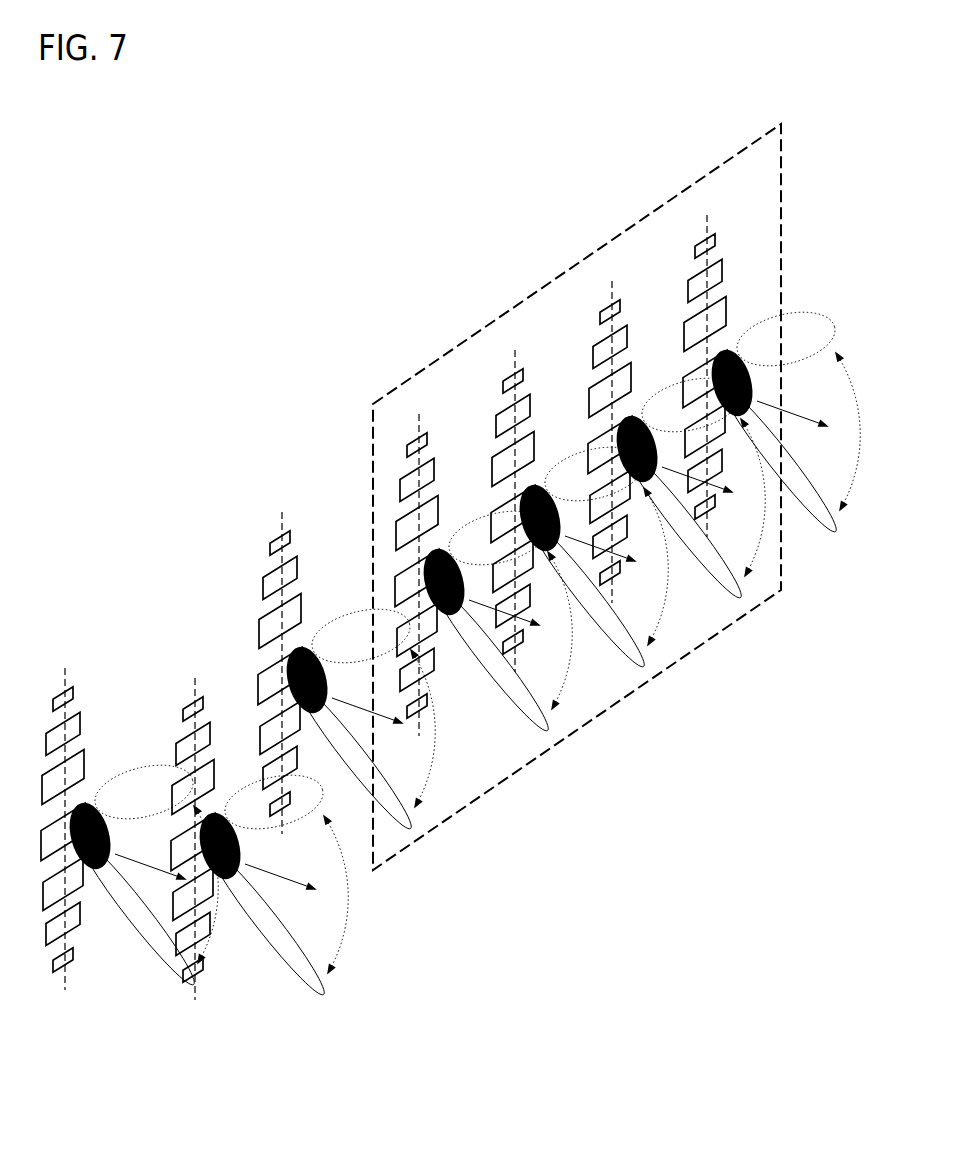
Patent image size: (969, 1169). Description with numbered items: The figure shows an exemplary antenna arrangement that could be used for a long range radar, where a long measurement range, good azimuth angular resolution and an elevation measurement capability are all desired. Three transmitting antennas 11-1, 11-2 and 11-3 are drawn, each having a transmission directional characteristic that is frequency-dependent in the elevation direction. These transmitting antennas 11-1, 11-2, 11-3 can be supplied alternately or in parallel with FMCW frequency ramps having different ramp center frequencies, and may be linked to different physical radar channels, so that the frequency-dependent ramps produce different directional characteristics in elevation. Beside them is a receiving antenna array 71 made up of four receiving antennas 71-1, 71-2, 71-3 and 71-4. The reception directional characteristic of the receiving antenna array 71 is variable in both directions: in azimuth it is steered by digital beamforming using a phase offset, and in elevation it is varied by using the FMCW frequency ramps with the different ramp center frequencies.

The transmitting antenna 11-1 is at (60, 660).
The transmitting antenna 11-2 is at (190, 672).
The transmitting antenna 11-3 is at (280, 505).
The receiving antenna array 71 is at (754, 140).
The receiving antenna 71-1 is at (414, 403).
The receiving antenna 71-2 is at (512, 342).
The receiving antenna 71-3 is at (606, 272).
The receiving antenna 71-4 is at (702, 205).